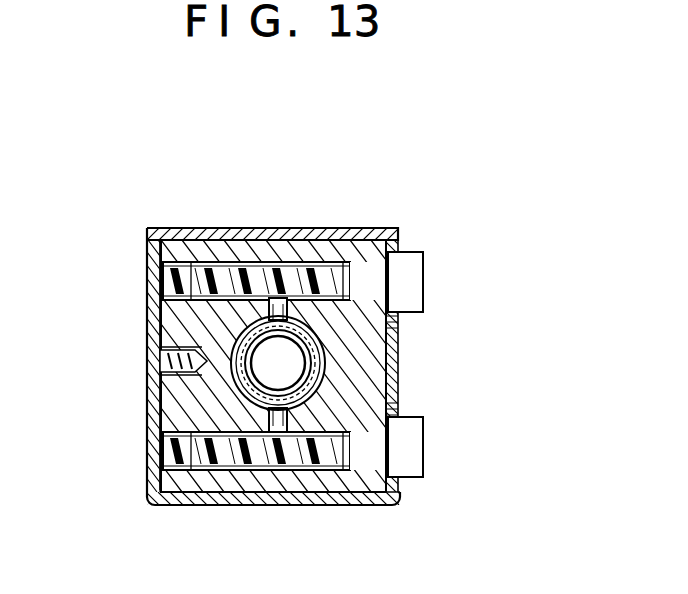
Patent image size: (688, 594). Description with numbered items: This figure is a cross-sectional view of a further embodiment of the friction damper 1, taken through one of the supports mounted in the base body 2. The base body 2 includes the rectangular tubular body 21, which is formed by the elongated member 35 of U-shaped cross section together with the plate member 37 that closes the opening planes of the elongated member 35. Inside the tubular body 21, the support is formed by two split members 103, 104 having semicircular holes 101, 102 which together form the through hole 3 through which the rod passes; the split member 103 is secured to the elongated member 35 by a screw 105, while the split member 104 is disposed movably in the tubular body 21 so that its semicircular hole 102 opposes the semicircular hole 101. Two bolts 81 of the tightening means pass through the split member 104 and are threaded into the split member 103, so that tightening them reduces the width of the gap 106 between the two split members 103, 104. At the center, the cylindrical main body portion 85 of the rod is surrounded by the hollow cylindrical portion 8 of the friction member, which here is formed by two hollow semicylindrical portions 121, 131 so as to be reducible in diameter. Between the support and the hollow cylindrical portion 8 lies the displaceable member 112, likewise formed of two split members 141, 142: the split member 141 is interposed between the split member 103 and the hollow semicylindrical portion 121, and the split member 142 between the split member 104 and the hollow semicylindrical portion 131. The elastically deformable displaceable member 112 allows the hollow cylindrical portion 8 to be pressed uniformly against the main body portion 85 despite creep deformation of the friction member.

The friction damper 1 is at (407, 217).
The base body 2 is at (147, 485).
The through hole 3 is at (240, 272).
The hollow cylindrical portion 8 is at (291, 316).
The rectangular tubular body 21 is at (147, 262).
The elongated member 35 is at (350, 500).
The plate member 37 is at (270, 240).
The bolts 81 is at (410, 266).
The cylindrical main body portion 85 is at (322, 372).
The semicircular hole 101 is at (203, 500).
The semicircular hole 102 is at (335, 338).
The split member 103 is at (214, 387).
The split member 104 is at (394, 500).
The screw 105 is at (160, 362).
The gap 106 is at (279, 492).
The hollow cylindrical displaceable member 112 is at (232, 332).
The hollow semicylindrical portion 121 is at (236, 347).
The hollow semicylindrical portion 131 is at (396, 327).
The split member 141 is at (226, 376).
The split member 142 is at (350, 390).